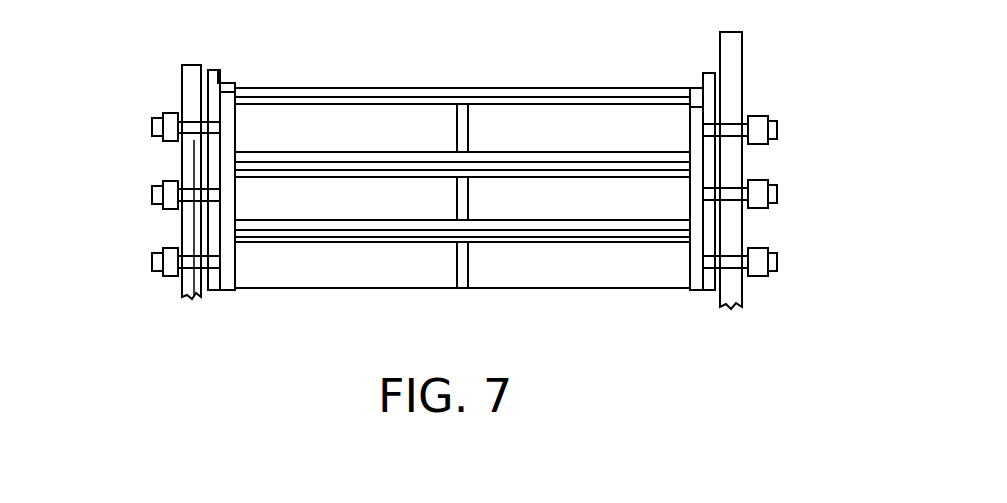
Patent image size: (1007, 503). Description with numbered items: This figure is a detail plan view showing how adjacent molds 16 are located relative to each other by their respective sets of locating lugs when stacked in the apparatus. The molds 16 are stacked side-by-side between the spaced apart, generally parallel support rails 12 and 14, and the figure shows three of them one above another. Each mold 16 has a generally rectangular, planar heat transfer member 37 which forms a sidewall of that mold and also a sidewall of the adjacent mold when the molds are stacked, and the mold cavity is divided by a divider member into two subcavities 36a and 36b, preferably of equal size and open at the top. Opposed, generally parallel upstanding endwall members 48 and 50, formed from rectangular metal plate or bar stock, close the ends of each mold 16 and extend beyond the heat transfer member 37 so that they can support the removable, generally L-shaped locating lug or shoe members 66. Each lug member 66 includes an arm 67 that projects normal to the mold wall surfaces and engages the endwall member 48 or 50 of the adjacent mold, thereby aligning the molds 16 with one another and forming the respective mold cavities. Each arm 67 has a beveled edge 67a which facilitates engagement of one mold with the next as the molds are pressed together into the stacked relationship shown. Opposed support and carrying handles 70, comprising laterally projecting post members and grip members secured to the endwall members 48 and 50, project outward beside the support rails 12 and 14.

The support rail 12 is at (192, 64).
The support rail 14 is at (743, 66).
The mold 16 is at (266, 148).
The subcavity 36a is at (440, 146).
The subcavity 36b is at (546, 146).
The heat transfer member 37 is at (452, 88).
The endwall member 48 is at (236, 187).
The endwall member 50 is at (694, 190).
The locating lug member 66 is at (210, 172).
The arm 67 is at (204, 155).
The beveled edge 67a is at (222, 70).
The support and carrying handle 70 is at (149, 193).